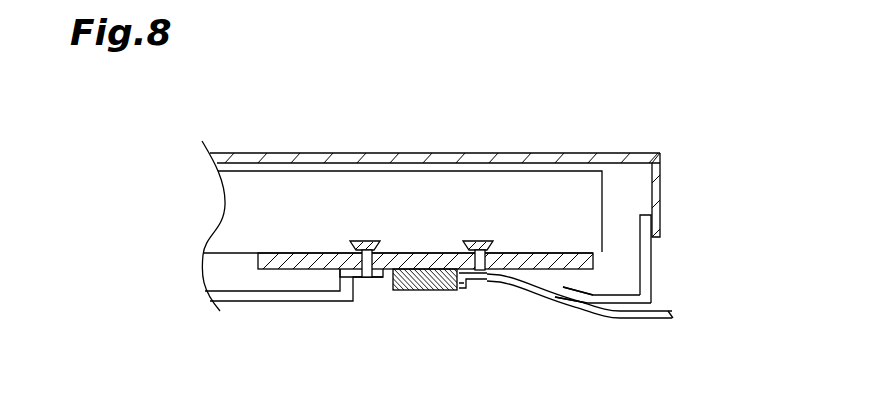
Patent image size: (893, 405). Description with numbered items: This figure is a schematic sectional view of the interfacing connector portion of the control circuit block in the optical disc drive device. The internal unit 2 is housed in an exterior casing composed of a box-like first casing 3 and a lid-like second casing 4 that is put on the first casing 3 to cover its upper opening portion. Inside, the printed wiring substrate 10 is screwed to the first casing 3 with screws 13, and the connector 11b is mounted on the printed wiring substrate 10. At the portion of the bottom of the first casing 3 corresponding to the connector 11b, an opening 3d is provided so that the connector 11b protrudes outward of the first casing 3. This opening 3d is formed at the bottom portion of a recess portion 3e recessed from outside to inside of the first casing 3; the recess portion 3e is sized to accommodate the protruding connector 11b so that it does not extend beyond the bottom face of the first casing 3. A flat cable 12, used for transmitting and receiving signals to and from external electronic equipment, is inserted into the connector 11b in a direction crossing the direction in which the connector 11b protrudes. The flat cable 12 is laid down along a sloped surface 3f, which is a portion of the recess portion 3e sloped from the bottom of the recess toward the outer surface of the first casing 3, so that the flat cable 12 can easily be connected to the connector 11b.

The internal unit 2 is at (243, 218).
The first casing 3 is at (277, 298).
The opening 3d is at (459, 289).
The recess portion 3e is at (366, 281).
The sloped surface 3f is at (563, 287).
The second casing 4 is at (312, 155).
The printed wiring substrate 10 is at (578, 262).
The connector 11b is at (415, 283).
The flat cable 12 is at (545, 297).
The screws 13 is at (475, 240).